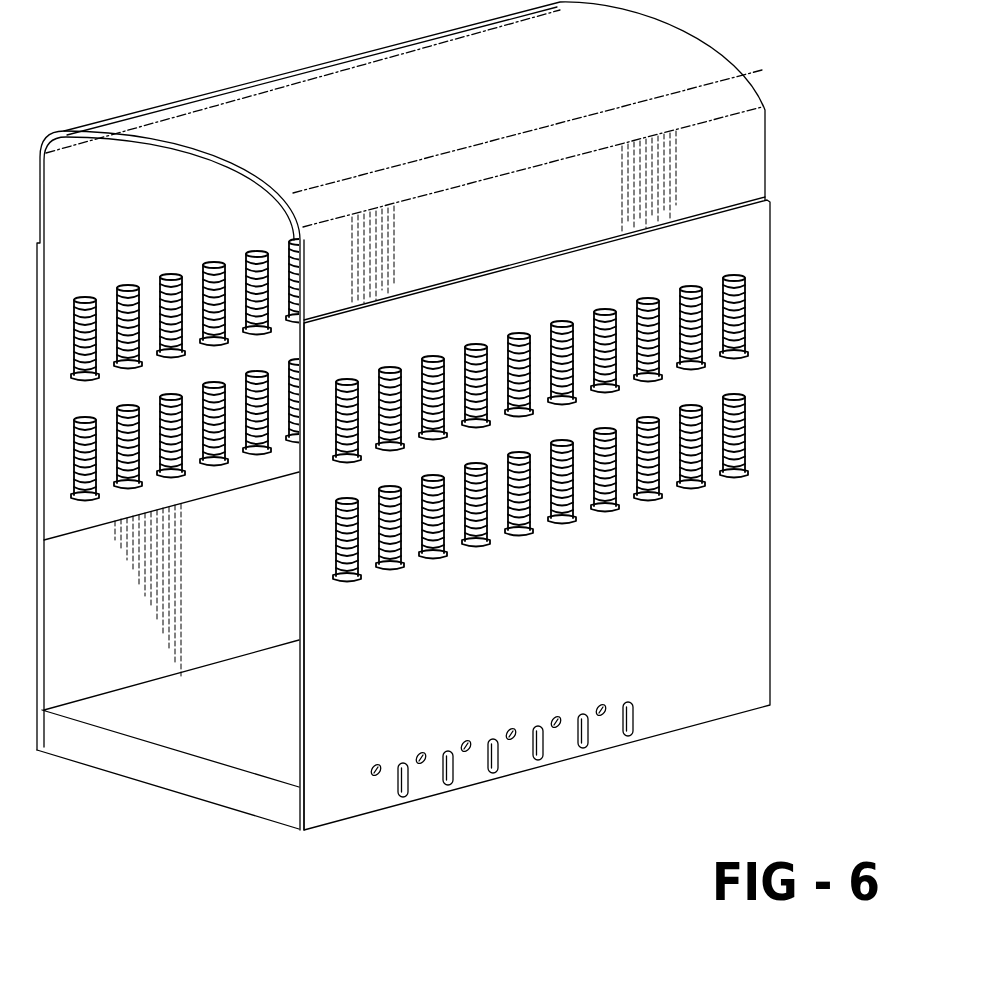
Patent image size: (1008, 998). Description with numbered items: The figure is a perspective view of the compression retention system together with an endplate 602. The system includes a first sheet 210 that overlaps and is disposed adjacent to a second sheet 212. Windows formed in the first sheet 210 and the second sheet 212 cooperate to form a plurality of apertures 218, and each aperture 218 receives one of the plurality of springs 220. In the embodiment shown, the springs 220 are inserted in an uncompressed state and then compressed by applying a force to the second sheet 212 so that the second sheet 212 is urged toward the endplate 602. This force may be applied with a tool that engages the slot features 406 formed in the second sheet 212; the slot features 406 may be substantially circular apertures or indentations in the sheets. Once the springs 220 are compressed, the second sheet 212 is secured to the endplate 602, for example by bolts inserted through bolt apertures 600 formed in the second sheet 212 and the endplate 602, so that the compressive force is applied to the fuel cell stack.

The first sheet 210 is at (750, 142).
The second sheet 212 is at (753, 612).
The apertures 218 is at (337, 583).
The springs 220 is at (743, 435).
The slot feature 406 is at (604, 718).
The bolt apertures 600 is at (580, 746).
The endplate 602 is at (200, 785).